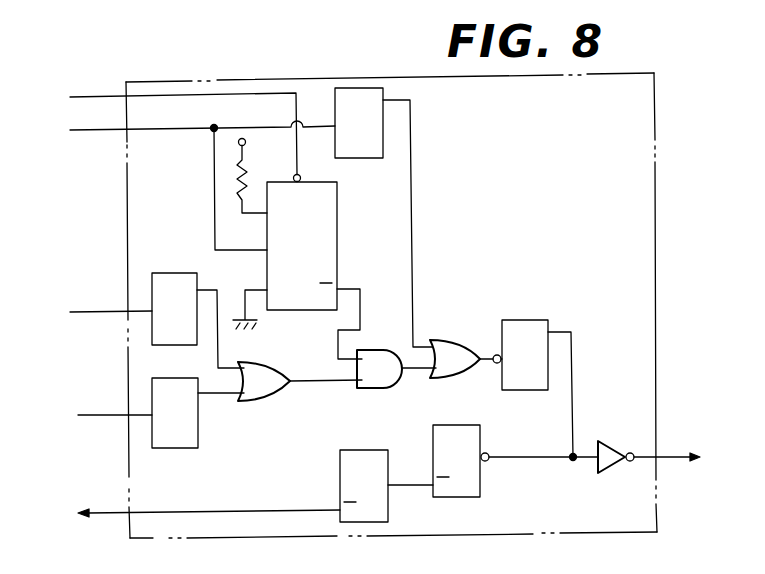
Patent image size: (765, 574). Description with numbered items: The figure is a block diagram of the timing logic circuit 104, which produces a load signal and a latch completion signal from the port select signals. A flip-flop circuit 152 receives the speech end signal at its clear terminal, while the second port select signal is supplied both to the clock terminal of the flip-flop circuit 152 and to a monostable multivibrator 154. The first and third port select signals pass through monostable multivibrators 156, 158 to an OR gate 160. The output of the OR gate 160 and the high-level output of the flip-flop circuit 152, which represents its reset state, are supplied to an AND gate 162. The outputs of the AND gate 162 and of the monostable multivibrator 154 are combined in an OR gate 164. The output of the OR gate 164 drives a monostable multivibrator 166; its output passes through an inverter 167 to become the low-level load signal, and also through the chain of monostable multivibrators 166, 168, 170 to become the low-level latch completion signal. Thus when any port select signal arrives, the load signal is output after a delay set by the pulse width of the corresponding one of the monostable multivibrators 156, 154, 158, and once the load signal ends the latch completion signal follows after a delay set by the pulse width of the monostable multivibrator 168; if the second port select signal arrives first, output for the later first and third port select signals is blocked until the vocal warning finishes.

The timing logic circuit 104 is at (124, 233).
The flip-flop circuit 152 is at (333, 229).
The monostable multivibrator 154 is at (364, 158).
The monostable multivibrator 156 is at (167, 273).
The monostable multivibrator 158 is at (186, 448).
The OR gate 160 is at (258, 402).
The AND gate 162 is at (380, 388).
The OR gate 164 is at (447, 340).
The monostable multivibrator 166 is at (522, 322).
The inverter 167 is at (607, 443).
The monostable multivibrator 168 is at (480, 482).
The monostable multivibrator 170 is at (357, 450).